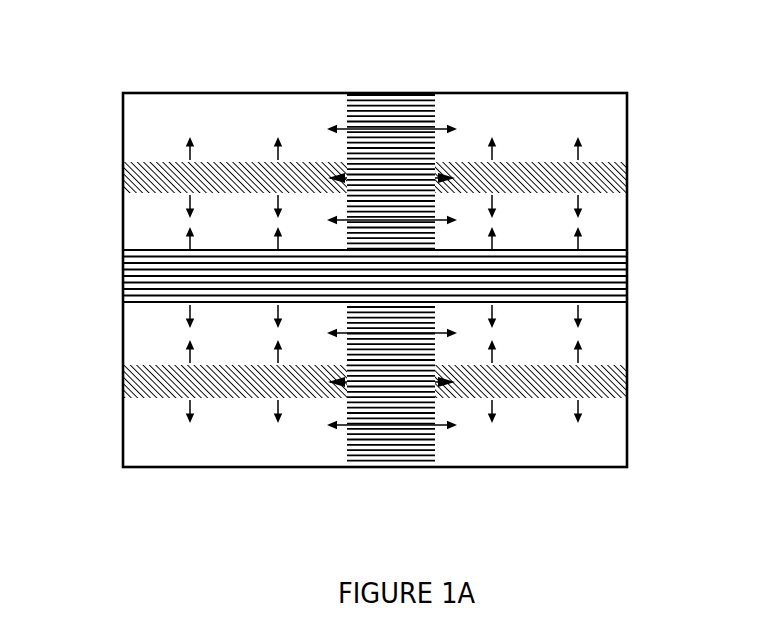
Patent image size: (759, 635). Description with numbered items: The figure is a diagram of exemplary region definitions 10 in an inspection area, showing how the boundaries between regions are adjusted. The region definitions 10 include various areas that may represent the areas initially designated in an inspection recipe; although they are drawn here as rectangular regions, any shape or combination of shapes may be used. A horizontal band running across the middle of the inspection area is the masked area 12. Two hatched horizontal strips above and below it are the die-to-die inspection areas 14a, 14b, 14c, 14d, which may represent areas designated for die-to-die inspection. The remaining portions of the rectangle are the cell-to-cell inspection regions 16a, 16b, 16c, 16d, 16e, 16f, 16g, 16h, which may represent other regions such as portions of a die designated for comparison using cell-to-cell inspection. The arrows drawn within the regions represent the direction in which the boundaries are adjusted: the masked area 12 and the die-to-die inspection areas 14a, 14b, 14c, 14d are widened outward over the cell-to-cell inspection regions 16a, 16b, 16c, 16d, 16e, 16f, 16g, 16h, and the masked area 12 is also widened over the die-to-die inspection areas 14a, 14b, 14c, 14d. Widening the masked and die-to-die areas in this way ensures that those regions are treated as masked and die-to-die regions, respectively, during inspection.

The region definitions 10 is at (122, 99).
The masked area 12 is at (375, 276).
The die-to-die inspection area 14a is at (133, 187).
The die-to-die inspection area 14b is at (627, 164).
The die-to-die inspection area 14c is at (130, 398).
The die-to-die inspection area 14d is at (622, 395).
The cell-to-cell inspection region 16a is at (263, 110).
The cell-to-cell inspection region 16b is at (503, 110).
The cell-to-cell inspection region 16c is at (133, 238).
The cell-to-cell inspection region 16d is at (613, 228).
The cell-to-cell inspection region 16e is at (130, 360).
The cell-to-cell inspection region 16f is at (610, 320).
The cell-to-cell inspection region 16g is at (280, 447).
The cell-to-cell inspection region 16h is at (475, 448).